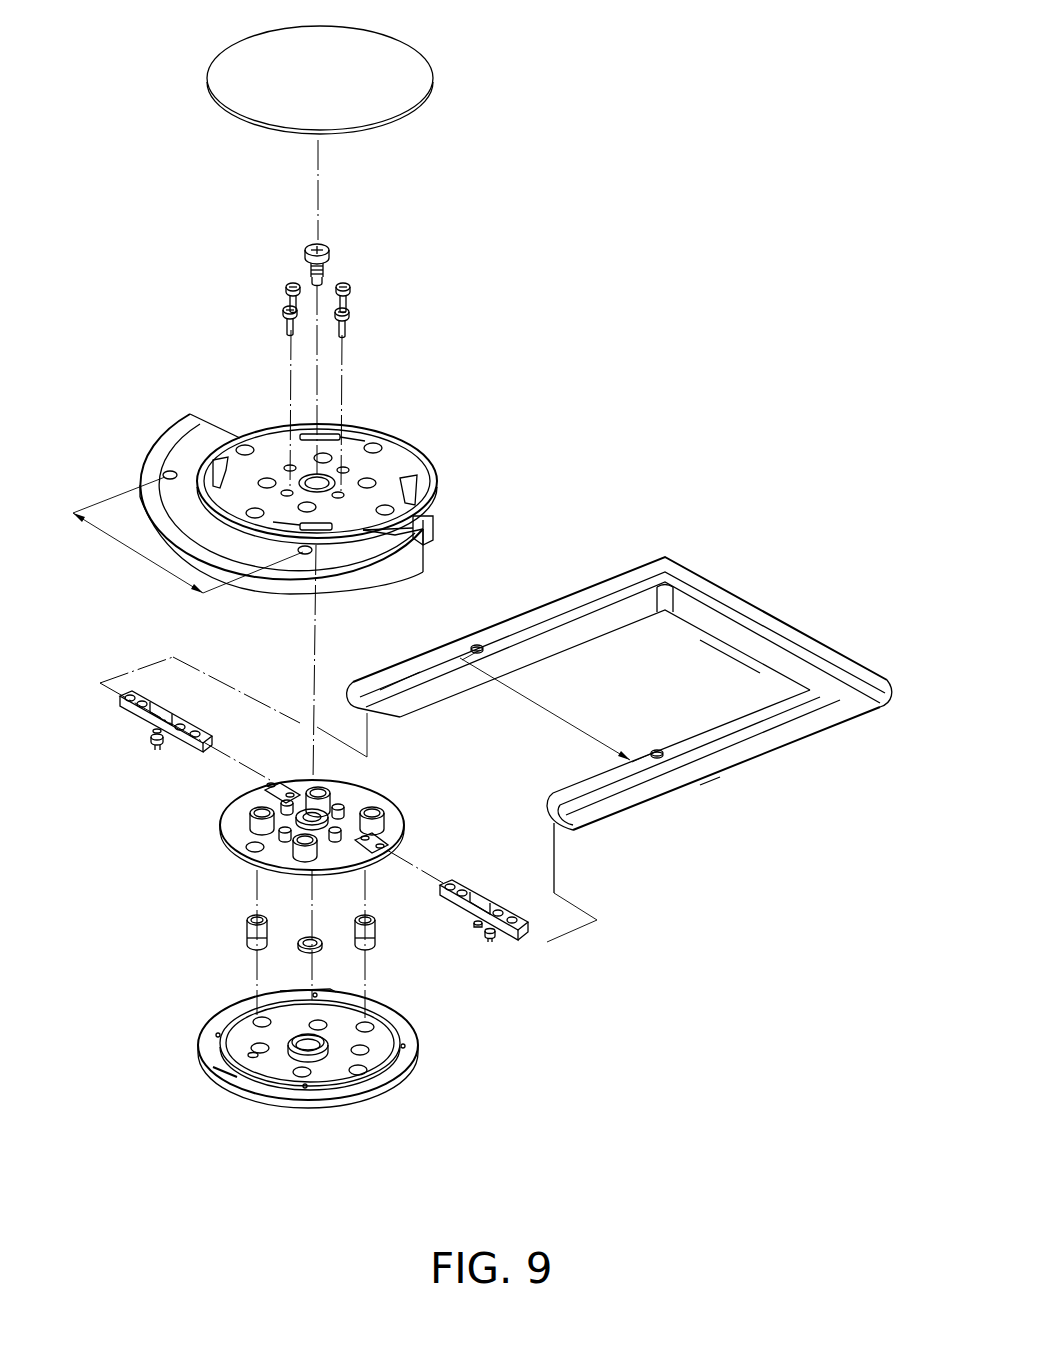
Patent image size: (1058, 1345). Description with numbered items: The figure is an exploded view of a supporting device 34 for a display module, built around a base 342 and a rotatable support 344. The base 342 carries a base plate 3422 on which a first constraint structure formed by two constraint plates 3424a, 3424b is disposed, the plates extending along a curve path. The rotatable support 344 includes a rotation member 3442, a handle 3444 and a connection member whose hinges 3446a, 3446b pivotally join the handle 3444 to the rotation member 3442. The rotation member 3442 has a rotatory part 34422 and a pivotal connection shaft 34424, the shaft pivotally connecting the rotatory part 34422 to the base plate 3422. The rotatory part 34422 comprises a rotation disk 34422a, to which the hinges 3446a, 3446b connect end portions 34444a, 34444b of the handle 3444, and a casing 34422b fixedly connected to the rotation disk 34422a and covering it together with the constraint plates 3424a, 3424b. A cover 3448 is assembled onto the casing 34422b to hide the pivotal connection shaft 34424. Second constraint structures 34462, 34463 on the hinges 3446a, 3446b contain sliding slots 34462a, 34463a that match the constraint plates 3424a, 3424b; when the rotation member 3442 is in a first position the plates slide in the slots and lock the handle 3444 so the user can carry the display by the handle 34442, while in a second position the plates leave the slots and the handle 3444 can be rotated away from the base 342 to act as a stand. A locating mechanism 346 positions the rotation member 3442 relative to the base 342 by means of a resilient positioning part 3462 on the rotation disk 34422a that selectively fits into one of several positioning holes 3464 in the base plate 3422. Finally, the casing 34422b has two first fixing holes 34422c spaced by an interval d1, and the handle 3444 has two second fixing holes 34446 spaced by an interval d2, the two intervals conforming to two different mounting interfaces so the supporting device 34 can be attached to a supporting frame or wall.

The supporting device 34 is at (760, 94).
The base 342 is at (368, 1105).
The rotatable support 344 is at (513, 62).
The locating mechanism 346 is at (152, 883).
The base plate 3422 is at (387, 1053).
The constraint plate 3424a is at (377, 988).
The constraint plate 3424b is at (212, 1053).
The rotation member 3442 is at (513, 272).
The handle 3444 is at (817, 488).
The hinge 3446a is at (488, 893).
The hinge 3446b is at (215, 657).
The cover 3448 is at (430, 74).
The resilient positioning part 3462 is at (247, 930).
The positioning holes 3464 is at (253, 1053).
The rotatory part 34422 is at (474, 368).
The rotation disk 34422a is at (383, 670).
The casing 34422b is at (403, 455).
The first fixing holes 34422c is at (162, 470).
The pivotal connection shaft 34424 is at (328, 246).
The handle 34442 is at (700, 790).
The end portion 34444a is at (745, 668).
The end portion 34444b is at (403, 675).
The second fixing holes 34446 is at (478, 648).
The second constraint structure 34462 is at (497, 942).
The sliding slot 34462a is at (477, 920).
The second constraint structure 34463 is at (156, 746).
The sliding slot 34463a is at (163, 743).
The interval d1 is at (188, 535).
The interval d2 is at (557, 706).